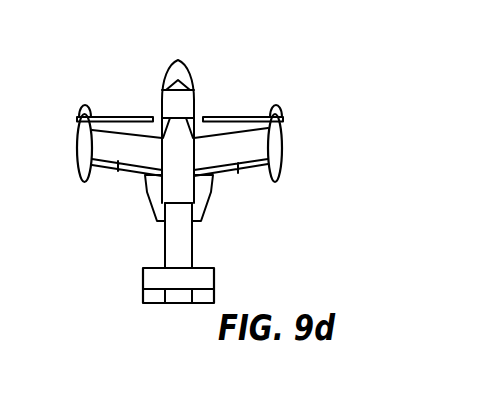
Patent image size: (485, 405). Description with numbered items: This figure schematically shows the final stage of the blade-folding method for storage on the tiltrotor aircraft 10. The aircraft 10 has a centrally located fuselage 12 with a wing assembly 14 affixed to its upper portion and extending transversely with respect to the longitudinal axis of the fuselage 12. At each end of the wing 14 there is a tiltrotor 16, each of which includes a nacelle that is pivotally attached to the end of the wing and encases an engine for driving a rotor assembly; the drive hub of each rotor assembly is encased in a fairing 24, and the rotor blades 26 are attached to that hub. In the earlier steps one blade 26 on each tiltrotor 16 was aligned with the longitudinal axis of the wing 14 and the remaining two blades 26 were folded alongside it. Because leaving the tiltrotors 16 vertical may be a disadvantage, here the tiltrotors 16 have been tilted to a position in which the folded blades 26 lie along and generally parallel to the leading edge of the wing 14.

The tiltrotor aircraft 10 is at (185, 158).
The fuselage assembly 12 is at (194, 49).
The wing assembly 14 is at (231, 187).
The tiltrotor 16 is at (63, 160).
The fairing 24 is at (78, 115).
The rotor blades 26 is at (103, 115).